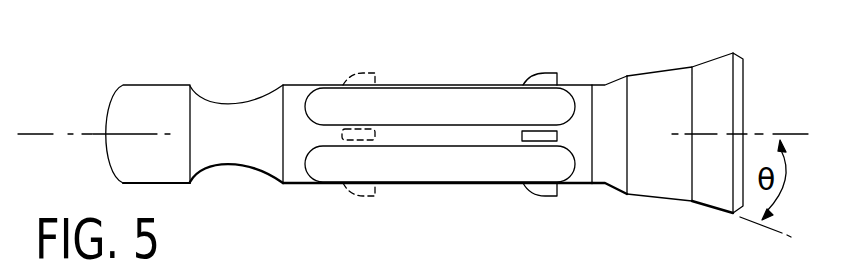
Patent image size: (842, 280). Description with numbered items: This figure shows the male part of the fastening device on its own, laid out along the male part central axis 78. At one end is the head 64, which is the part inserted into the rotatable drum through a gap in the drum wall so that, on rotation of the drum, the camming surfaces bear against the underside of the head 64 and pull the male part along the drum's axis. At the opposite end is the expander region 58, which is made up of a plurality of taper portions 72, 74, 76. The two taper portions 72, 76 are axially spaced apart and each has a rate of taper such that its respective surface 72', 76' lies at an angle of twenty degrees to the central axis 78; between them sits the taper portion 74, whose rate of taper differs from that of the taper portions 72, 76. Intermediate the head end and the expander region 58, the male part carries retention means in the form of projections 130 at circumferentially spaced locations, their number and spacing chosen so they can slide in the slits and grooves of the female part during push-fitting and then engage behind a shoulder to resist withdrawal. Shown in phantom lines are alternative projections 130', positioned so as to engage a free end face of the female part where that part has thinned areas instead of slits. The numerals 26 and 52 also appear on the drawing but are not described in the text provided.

The male part central axis 78 is at (53, 134).
The head 64 is at (143, 104).
The neck portion 26 is at (200, 88).
The body 52 is at (299, 189).
The projections 130 is at (512, 111).
The projections 130' is at (398, 111).
The surface of taper portion 76' is at (591, 110).
The taper portion 76 is at (586, 215).
The taper portion 74 is at (661, 185).
The surface of taper portion 72' is at (695, 38).
The taper portion 72 is at (729, 235).
The expander region 58 is at (720, 102).